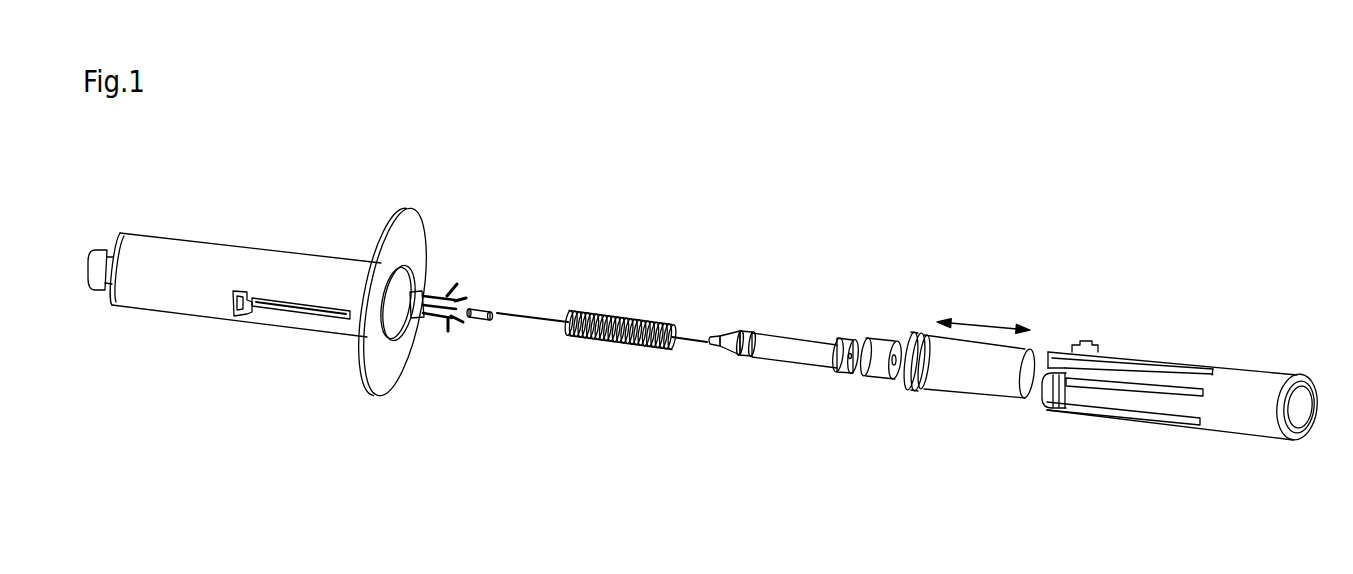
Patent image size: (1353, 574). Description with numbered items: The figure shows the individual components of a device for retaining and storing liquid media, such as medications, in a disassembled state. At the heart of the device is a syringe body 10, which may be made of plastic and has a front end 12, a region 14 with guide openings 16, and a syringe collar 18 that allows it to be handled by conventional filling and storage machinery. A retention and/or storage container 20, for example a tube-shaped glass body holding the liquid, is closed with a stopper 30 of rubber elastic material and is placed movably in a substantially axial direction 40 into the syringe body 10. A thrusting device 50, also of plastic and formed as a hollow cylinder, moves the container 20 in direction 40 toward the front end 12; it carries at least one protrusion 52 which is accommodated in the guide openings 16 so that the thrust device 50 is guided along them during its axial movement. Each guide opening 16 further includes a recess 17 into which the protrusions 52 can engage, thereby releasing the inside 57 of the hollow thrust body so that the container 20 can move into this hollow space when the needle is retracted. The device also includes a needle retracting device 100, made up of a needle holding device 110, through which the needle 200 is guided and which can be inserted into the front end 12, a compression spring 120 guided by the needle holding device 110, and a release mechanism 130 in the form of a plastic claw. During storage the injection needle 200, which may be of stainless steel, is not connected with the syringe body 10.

The syringe body 10 is at (229, 293).
The front end 12 is at (95, 278).
The region 14 is at (302, 252).
The guide opening 16 is at (305, 316).
The recess 17 is at (247, 313).
The syringe collar 18 is at (405, 207).
The retention and/or storage container 20 is at (975, 378).
The stopper 30 is at (868, 390).
The axial direction 40 is at (983, 318).
The thrusting device 50 is at (1170, 376).
The protrusion 52 is at (1104, 335).
The inside of the thrust body 57 is at (1049, 383).
The needle retracting device 100 is at (625, 340).
The needle holding device 110 is at (778, 347).
The compression spring 120 is at (642, 360).
The release mechanism 130 is at (433, 288).
The needle 200 is at (533, 322).